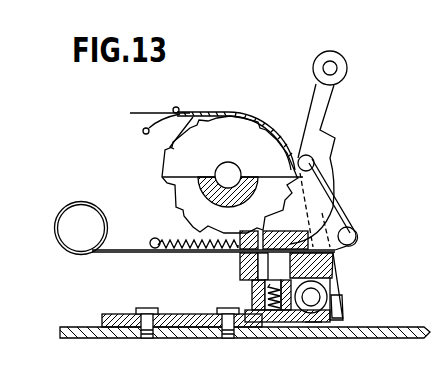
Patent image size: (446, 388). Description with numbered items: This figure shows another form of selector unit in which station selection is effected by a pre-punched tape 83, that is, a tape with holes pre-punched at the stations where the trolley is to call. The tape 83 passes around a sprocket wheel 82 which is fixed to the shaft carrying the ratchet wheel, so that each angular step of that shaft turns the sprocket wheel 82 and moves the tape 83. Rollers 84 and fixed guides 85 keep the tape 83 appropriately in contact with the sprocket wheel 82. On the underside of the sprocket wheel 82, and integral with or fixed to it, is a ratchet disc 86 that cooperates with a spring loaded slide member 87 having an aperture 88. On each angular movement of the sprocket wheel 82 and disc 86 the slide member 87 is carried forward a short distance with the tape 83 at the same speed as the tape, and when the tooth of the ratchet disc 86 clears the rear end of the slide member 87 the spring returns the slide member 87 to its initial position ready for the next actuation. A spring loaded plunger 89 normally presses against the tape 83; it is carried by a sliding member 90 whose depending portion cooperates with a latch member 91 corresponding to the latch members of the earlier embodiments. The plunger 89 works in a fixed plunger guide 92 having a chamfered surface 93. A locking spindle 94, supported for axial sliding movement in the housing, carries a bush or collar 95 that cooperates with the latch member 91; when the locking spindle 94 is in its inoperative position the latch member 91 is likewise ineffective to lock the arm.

The sprocket wheel 82 is at (245, 113).
The pre-punched tape 83 is at (318, 192).
The rollers 84 is at (313, 158).
The fixed guides 85 is at (192, 109).
The ratchet disc 86 is at (172, 190).
The spring loaded slide member 87 is at (330, 208).
The aperture 88 is at (238, 252).
The spring loaded plunger 89 is at (240, 275).
The sliding member 90 is at (303, 324).
The latch member 91 is at (322, 103).
The fixed plunger guide 92 is at (333, 258).
The chamfered surface 93 is at (327, 293).
The locking spindle 94 is at (313, 321).
The bush or collar 95 is at (340, 305).